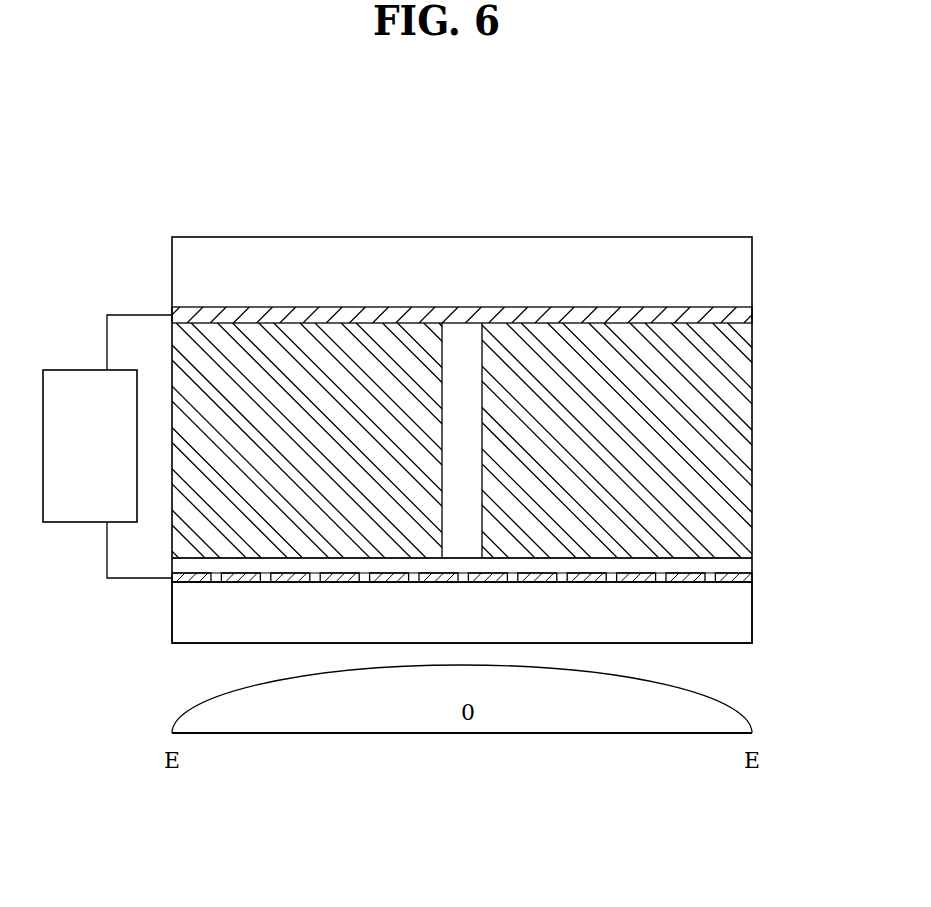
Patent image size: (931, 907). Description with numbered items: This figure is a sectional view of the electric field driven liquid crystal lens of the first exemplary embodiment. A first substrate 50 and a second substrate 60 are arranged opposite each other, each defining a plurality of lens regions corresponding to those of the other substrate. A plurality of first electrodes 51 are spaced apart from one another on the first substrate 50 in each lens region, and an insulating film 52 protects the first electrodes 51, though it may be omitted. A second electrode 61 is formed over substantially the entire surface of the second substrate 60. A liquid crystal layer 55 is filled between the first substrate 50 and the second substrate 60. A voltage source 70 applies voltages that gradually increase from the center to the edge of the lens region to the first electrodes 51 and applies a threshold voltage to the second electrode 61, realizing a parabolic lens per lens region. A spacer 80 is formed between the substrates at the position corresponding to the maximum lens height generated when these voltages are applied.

The first substrate 50 is at (752, 620).
The first electrodes 51 is at (752, 578).
The insulating film 52 is at (752, 566).
The liquid crystal layer 55 is at (752, 437).
The second substrate 60 is at (752, 268).
The second electrode 61 is at (752, 320).
The voltage source 70 is at (107, 446).
The spacer 80 is at (467, 333).